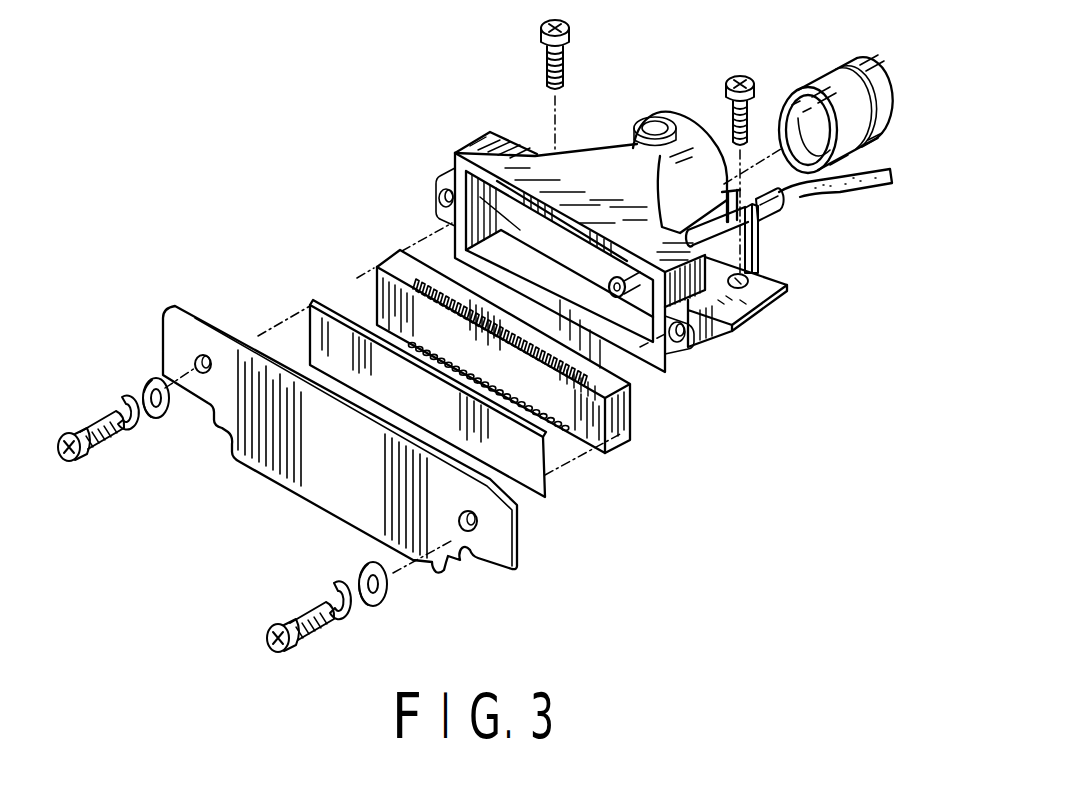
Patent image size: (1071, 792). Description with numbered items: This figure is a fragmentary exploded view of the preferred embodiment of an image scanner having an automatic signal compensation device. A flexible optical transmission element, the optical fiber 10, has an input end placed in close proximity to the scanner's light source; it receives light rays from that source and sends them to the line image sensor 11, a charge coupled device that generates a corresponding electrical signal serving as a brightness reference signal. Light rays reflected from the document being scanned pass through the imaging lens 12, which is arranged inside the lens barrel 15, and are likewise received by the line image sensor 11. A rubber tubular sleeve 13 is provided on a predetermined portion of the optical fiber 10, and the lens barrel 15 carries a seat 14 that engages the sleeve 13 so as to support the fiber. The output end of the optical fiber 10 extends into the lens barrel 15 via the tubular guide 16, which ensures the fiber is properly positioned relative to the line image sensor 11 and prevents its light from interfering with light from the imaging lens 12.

The optical fiber 10 is at (810, 195).
The line image sensor 11 is at (594, 448).
The imaging lens 12 is at (814, 90).
The rubber tubular sleeve 13 is at (770, 214).
The seat 14 is at (786, 259).
The lens barrel 15 is at (486, 152).
The tubular guide 16 is at (617, 278).